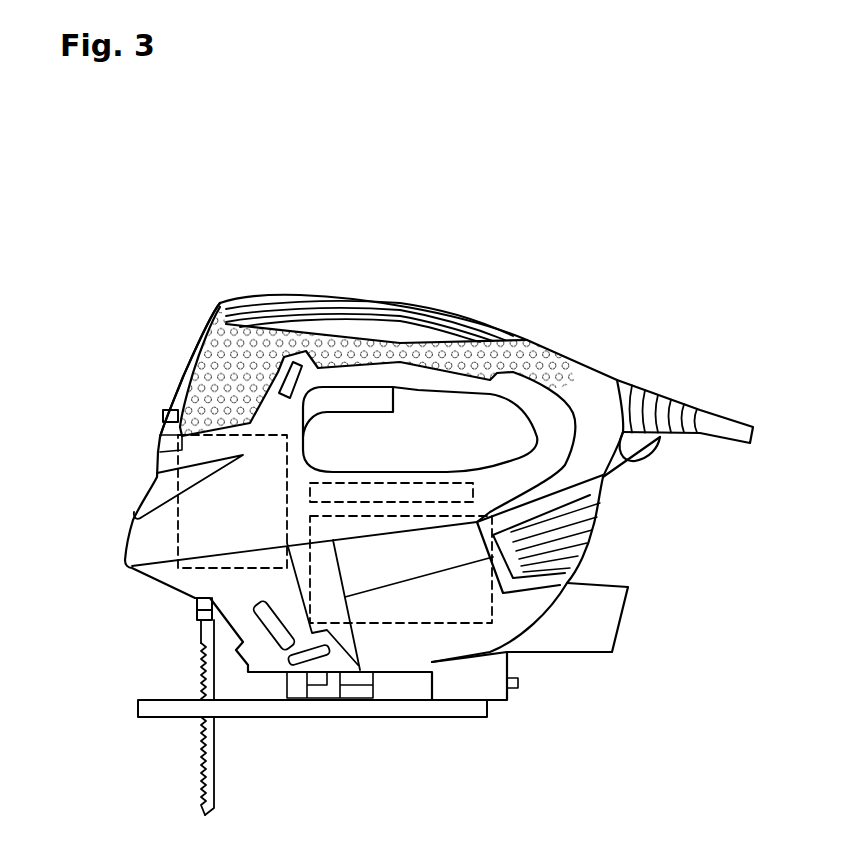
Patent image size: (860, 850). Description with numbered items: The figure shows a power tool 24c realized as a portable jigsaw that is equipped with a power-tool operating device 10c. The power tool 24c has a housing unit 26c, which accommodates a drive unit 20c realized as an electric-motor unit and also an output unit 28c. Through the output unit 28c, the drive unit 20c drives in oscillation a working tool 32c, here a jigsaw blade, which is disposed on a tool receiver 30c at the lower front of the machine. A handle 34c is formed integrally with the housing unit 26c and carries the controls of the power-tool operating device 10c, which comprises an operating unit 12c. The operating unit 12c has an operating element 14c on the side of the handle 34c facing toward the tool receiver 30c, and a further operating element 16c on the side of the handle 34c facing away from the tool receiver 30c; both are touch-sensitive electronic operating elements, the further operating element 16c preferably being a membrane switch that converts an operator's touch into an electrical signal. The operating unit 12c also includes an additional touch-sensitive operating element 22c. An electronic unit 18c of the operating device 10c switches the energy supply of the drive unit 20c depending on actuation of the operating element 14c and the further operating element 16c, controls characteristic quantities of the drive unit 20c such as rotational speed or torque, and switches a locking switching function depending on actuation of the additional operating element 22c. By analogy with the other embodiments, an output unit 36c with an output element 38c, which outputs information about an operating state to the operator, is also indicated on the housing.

The power-tool operating device 10c is at (197, 187).
The operating unit 12c is at (167, 313).
The operating element 14c is at (367, 400).
The further operating element 16c is at (423, 323).
The electronic unit 18c is at (463, 492).
The drive unit 20c is at (442, 608).
The additional operating element 22c is at (293, 384).
The power tool 24c is at (680, 272).
The housing unit 26c is at (662, 358).
The output unit 28c is at (187, 532).
The tool receiver 30c is at (207, 613).
The working tool 32c is at (213, 792).
The handle 34c is at (510, 360).
The front housing edge 36c is at (187, 377).
The display element 38c is at (167, 418).